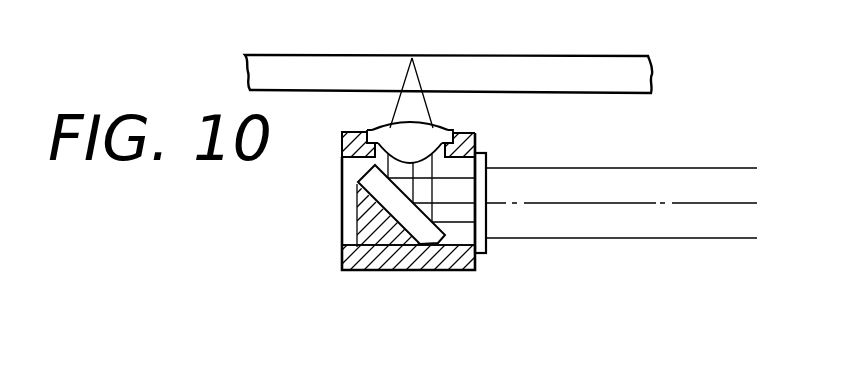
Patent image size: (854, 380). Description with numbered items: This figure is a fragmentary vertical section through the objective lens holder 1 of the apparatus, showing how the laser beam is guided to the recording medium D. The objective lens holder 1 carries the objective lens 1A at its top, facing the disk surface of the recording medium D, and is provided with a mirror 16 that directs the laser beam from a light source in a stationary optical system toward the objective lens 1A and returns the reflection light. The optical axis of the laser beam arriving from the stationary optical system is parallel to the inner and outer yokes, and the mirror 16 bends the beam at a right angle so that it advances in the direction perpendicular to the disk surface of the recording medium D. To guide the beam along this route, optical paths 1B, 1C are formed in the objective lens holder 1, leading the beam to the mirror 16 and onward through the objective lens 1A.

The recording medium D is at (343, 68).
The objective lens holder 1 is at (368, 271).
The objective lens 1A is at (438, 128).
The optical path 1B is at (458, 223).
The optical path 1C is at (434, 171).
The mirror 16 is at (376, 180).